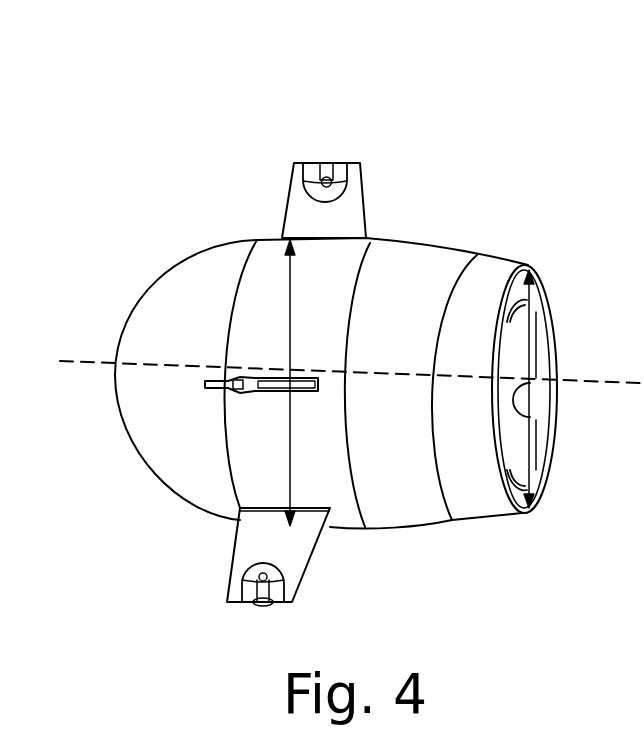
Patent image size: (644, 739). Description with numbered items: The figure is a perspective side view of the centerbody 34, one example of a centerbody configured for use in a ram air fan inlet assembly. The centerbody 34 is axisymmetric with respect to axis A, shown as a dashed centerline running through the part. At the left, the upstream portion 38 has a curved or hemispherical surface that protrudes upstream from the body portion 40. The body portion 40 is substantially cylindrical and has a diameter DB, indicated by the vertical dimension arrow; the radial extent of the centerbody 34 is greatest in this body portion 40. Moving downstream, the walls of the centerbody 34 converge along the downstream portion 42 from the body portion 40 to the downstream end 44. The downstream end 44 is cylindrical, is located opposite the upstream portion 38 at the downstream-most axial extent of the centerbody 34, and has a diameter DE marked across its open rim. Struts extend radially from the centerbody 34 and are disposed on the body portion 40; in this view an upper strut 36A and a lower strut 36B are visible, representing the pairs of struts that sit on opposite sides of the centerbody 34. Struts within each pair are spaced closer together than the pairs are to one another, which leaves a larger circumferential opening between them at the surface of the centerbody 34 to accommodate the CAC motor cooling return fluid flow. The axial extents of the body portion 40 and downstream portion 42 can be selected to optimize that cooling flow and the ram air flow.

The centerbody 34 is at (170, 169).
The strut 36A is at (293, 180).
The strut 36B is at (263, 377).
The upstream portion 38 is at (150, 480).
The body portion 40 is at (337, 238).
The downstream portion 42 is at (478, 255).
The downstream end 44 is at (535, 270).
The axis A is at (605, 382).
The diameter of body portion DB is at (290, 443).
The diameter of downstream end DE is at (527, 438).